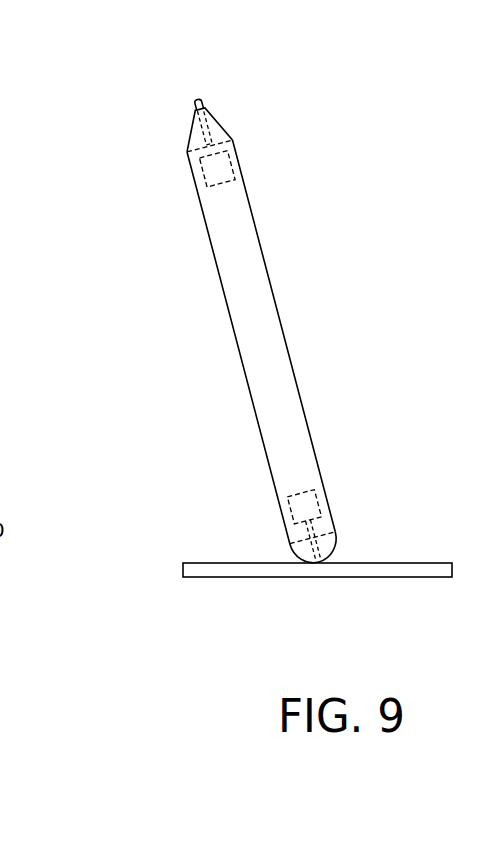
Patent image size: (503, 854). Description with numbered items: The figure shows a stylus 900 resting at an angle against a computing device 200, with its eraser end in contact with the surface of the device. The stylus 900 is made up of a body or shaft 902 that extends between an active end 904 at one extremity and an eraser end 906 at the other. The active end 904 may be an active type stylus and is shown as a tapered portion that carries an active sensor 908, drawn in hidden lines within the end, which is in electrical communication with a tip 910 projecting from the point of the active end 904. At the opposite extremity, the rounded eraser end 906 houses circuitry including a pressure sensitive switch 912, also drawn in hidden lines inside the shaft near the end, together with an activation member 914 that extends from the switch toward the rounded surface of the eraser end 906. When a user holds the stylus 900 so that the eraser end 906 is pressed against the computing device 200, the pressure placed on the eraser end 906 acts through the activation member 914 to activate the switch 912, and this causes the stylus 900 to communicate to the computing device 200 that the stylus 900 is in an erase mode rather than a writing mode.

The computing device 200 is at (425, 563).
The stylus 900 is at (289, 322).
The body or shaft 902 is at (275, 318).
The active end 904 is at (223, 140).
The eraser end 906 is at (332, 550).
The active sensor 908 is at (232, 170).
The tip 910 is at (203, 102).
The pressure sensitive switch 912 is at (315, 493).
The activation member 914 is at (310, 538).